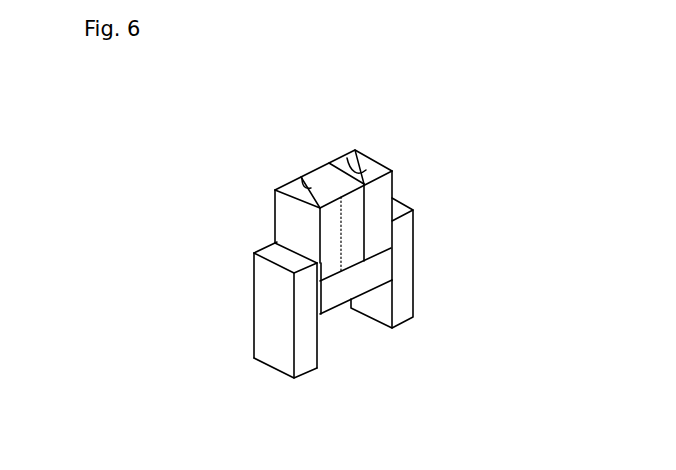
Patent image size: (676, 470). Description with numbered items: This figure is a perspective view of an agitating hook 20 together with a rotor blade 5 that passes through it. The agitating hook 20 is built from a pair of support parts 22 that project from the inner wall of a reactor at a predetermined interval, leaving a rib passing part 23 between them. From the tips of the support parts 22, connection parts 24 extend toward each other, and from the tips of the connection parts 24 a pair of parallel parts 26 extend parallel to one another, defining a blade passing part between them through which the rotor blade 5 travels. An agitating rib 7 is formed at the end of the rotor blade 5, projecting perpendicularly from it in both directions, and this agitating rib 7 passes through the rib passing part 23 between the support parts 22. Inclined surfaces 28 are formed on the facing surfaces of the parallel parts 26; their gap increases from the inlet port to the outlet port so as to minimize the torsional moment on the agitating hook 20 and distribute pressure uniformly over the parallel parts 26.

The rotor blade 5 is at (351, 203).
The agitating rib 7 is at (324, 304).
The agitating hook 20 is at (197, 182).
The support part 22 is at (305, 342).
The rib passing part 23 is at (366, 346).
The connection part 24 is at (308, 277).
The parallel part 26 is at (315, 227).
The inclined surface 28 is at (303, 178).